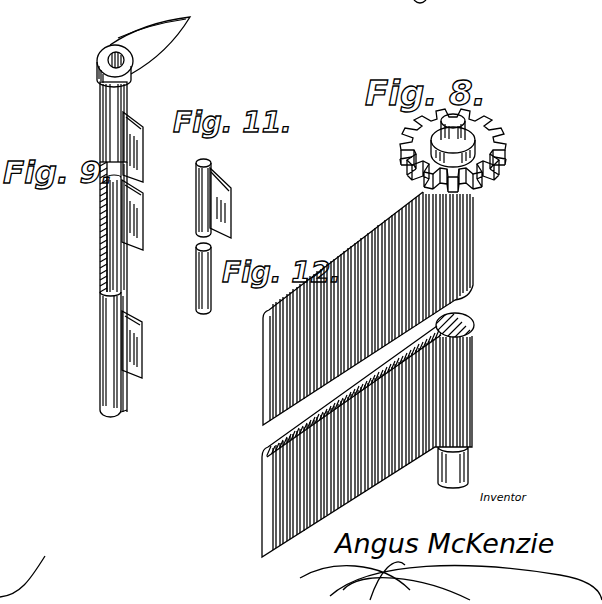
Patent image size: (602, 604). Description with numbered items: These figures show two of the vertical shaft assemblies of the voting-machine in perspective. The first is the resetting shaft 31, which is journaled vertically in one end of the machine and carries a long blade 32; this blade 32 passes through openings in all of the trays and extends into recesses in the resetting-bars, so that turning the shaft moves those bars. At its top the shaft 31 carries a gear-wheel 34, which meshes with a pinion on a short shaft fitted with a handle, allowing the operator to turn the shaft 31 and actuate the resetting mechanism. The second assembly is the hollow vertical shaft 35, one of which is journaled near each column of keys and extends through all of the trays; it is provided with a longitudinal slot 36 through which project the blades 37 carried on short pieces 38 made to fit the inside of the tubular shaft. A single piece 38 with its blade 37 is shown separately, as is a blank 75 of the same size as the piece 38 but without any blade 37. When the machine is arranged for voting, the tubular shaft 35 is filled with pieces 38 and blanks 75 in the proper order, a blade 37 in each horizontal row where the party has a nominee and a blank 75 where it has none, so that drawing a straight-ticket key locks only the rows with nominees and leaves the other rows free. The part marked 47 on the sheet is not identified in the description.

In FIG. 8, the shaft 31 is at (463, 128).
In FIG. 8, the blade 32 is at (374, 233).
In FIG. 8, the gear-wheel 34 is at (408, 148).
In FIG. 9, the hollow vertical shaft 35 is at (112, 106).
In FIG. 9, the longitudinal slot 36 is at (126, 296).
In FIG. 9, the blade 37 is at (137, 208).
In FIG. 11, the blade 37 is at (222, 212).
In FIG. 9, the short piece 38 is at (118, 214).
In FIG. 11, the short piece 38 is at (207, 163).
In FIG. 9, the hook 47 is at (180, 33).
In FIG. 9, the blank 75 is at (115, 267).
In FIG. 12, the blank 75 is at (210, 298).